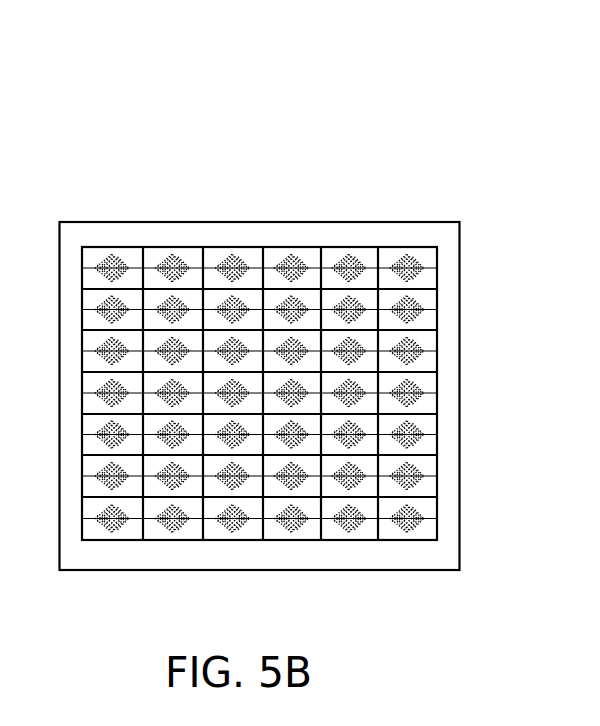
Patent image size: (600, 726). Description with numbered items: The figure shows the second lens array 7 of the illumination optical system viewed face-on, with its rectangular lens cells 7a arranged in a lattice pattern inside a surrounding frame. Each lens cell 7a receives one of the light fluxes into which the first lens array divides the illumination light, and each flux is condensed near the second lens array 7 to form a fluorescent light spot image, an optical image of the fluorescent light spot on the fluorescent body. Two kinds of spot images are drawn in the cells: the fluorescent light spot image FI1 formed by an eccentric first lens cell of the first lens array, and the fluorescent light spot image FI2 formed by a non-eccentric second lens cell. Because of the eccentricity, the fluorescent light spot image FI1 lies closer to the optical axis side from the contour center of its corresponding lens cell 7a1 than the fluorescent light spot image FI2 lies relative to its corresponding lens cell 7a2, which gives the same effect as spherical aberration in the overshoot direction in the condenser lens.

The second lens array 7 is at (382, 222).
The lens cell 7a is at (255, 143).
The lens cell 7a1 is at (312, 421).
The lens cell 7a2 is at (90, 377).
The fluorescent light spot image FI1 is at (235, 388).
The fluorescent light spot image FI2 is at (108, 260).